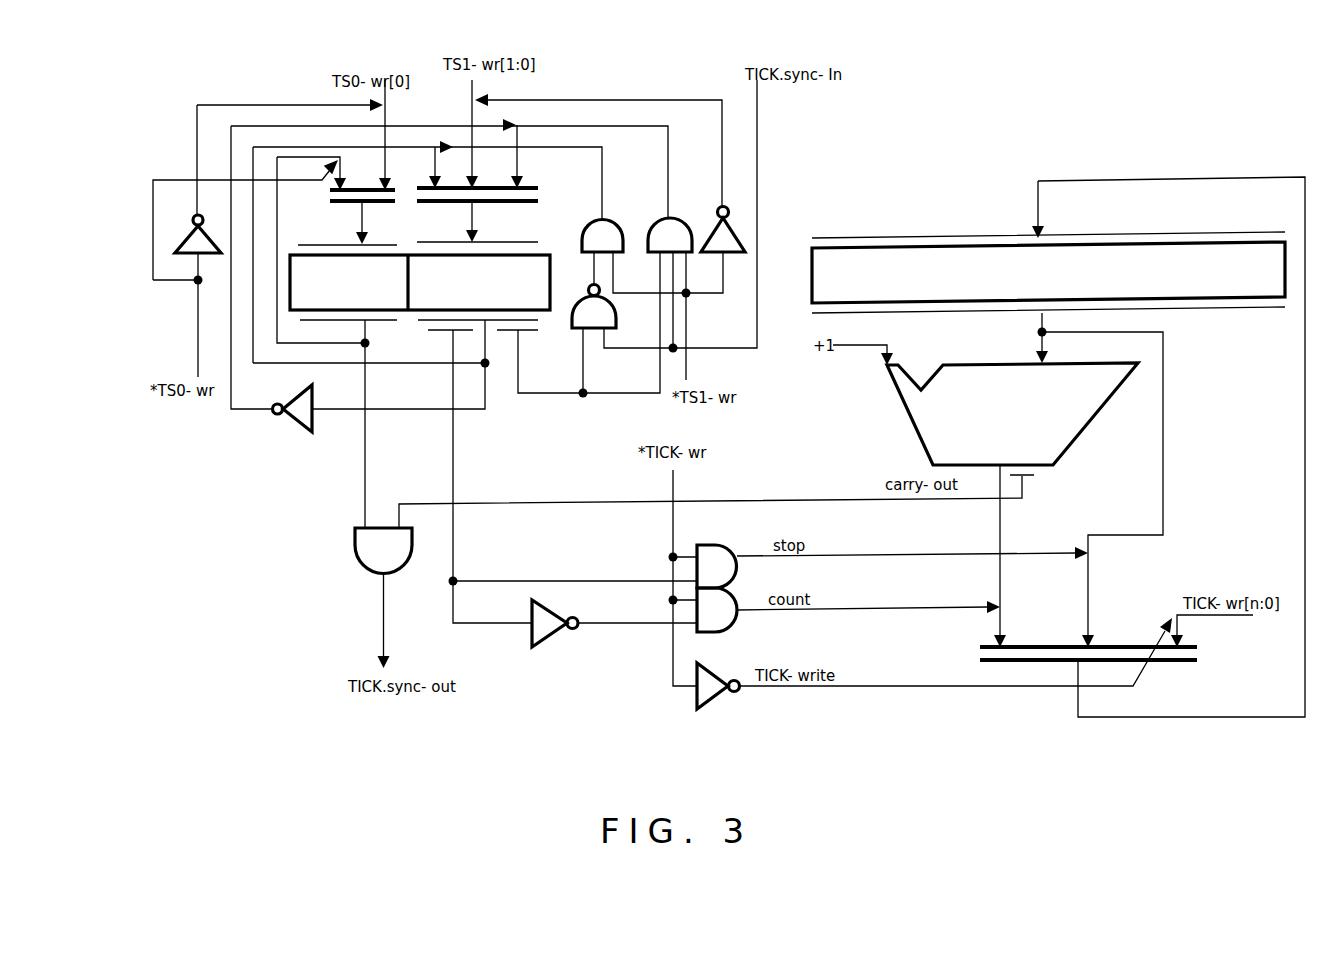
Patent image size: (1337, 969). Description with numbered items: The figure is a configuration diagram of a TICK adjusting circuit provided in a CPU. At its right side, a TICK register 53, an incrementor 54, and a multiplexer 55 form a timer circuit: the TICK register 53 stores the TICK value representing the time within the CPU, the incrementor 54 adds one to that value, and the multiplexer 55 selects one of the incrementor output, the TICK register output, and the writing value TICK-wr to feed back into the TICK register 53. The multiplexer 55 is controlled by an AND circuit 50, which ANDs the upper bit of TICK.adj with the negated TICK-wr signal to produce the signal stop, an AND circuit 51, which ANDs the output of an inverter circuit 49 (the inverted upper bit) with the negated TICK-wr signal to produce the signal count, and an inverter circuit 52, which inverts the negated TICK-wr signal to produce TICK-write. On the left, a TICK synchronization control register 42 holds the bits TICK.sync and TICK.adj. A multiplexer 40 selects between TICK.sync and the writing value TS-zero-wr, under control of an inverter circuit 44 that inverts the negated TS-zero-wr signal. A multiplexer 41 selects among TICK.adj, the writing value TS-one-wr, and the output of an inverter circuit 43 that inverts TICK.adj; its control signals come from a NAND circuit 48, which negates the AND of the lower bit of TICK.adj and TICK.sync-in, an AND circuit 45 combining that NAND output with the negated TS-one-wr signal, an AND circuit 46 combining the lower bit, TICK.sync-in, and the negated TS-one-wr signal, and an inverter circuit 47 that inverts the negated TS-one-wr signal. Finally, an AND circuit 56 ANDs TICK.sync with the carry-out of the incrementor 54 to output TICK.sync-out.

The multiplexer 40 is at (330, 200).
The multiplexer 41 is at (538, 197).
The TICK synchronization control register 42 is at (290, 287).
The inverter circuit 43 is at (301, 432).
The inverter circuit 44 is at (191, 231).
The AND circuit 45 is at (612, 220).
The AND circuit 46 is at (680, 218).
The inverter circuit 47 is at (742, 238).
The NAND circuit 48 is at (572, 328).
The inverter circuit 49 is at (556, 612).
The AND circuit 50 is at (708, 545).
The AND circuit 51 is at (740, 598).
The inverter circuit 52 is at (714, 673).
The TICK register 53 is at (812, 278).
The incrementor 54 is at (978, 363).
The multiplexer 55 is at (1197, 655).
The AND circuit 56 is at (355, 545).